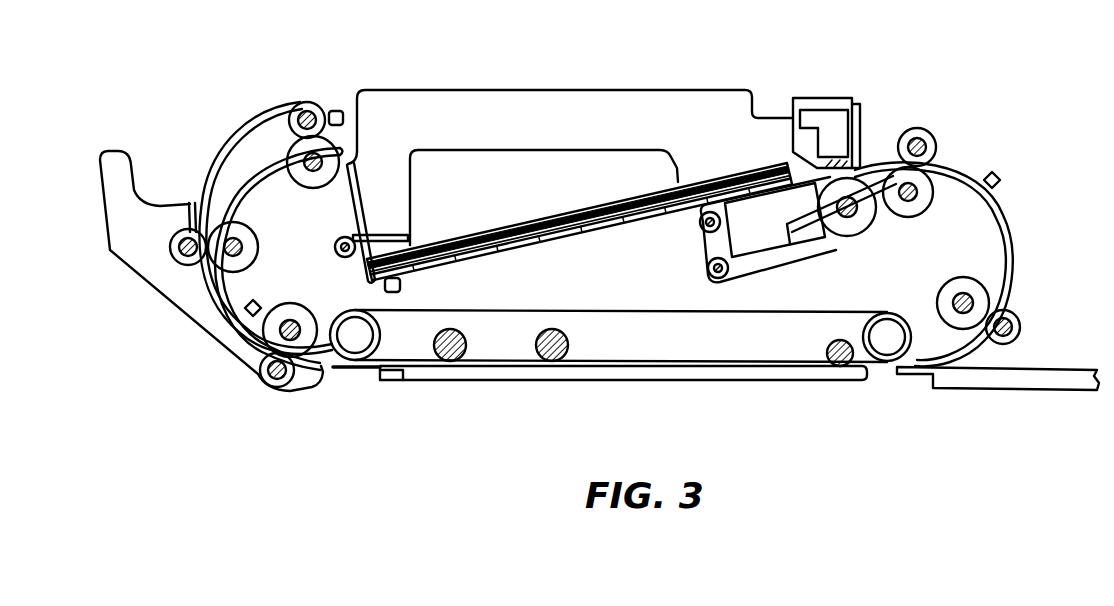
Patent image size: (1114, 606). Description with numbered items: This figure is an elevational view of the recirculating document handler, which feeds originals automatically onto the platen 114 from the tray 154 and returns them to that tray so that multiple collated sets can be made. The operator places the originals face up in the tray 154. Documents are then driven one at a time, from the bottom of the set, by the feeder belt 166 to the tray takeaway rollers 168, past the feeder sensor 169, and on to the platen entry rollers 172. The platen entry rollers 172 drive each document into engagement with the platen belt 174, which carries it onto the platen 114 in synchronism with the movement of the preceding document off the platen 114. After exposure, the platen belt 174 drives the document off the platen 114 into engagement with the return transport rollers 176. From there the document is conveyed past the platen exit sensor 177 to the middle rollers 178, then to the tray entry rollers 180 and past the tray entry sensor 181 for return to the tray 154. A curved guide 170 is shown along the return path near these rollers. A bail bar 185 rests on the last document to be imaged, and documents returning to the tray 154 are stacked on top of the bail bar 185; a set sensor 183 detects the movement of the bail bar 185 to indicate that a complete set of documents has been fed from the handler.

The platen 114 is at (523, 368).
The tray 154 is at (734, 178).
The feeder belt 166 is at (699, 242).
The tray takeaway rollers 168 is at (938, 148).
The feeder sensor 169 is at (1000, 181).
The curved document guide belt 170 is at (1013, 258).
The platen entry rollers 172 is at (1017, 316).
The platen belt 174 is at (646, 311).
The return transport rollers 176 is at (306, 313).
The platen exit sensor 177 is at (259, 304).
The middle rollers 178 is at (258, 251).
The tray entry rollers 180 is at (314, 103).
The tray entry sensor 181 is at (338, 110).
The set sensor 183 is at (402, 284).
The bail bar 185 is at (403, 214).